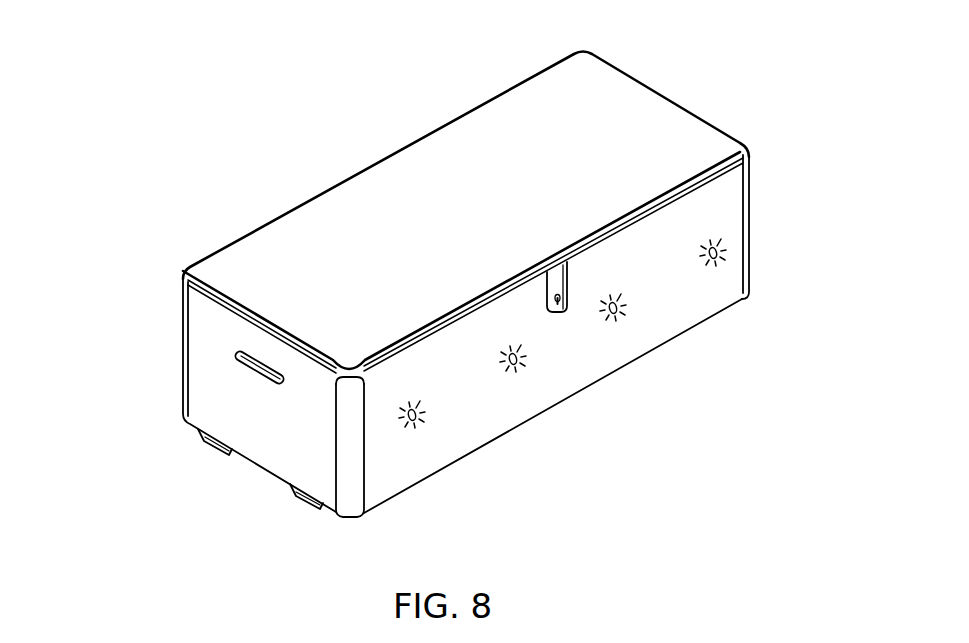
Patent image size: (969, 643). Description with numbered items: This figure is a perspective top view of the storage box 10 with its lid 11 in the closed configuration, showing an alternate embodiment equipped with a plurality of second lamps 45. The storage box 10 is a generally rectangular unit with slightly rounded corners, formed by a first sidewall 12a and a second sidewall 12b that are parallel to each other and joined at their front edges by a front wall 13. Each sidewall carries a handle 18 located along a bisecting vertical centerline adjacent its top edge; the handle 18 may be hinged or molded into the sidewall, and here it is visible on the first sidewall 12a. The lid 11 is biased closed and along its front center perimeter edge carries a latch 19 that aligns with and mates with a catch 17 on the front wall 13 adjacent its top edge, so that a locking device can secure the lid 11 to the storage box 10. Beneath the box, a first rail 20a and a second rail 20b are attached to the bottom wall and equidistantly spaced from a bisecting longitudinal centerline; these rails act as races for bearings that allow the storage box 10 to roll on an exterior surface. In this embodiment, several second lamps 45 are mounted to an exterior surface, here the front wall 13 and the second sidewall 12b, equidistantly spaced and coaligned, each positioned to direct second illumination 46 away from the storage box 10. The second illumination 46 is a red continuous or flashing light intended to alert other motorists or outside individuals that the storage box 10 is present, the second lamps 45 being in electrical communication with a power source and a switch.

The storage box 10 is at (106, 175).
The lid 11 is at (403, 200).
The first sidewall 12a is at (287, 435).
The second sidewall 12b is at (752, 237).
The front wall 13 is at (643, 327).
The catch 17 is at (560, 308).
The handle 18 is at (240, 362).
The latch 19 is at (566, 280).
The first rail 20a is at (200, 438).
The second rail 20b is at (297, 488).
The second lamp 45 is at (415, 423).
The second illumination 46 is at (417, 400).